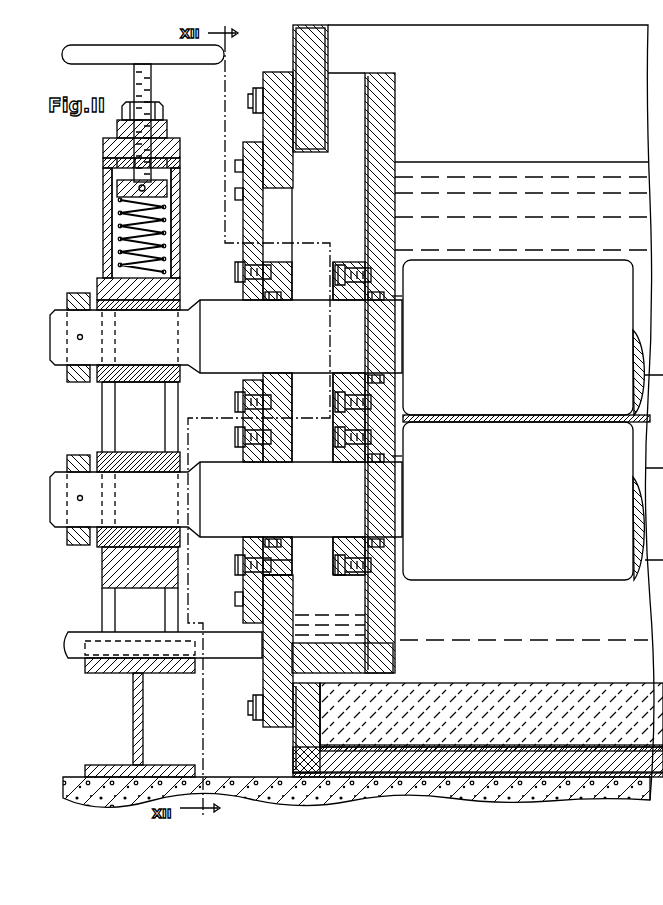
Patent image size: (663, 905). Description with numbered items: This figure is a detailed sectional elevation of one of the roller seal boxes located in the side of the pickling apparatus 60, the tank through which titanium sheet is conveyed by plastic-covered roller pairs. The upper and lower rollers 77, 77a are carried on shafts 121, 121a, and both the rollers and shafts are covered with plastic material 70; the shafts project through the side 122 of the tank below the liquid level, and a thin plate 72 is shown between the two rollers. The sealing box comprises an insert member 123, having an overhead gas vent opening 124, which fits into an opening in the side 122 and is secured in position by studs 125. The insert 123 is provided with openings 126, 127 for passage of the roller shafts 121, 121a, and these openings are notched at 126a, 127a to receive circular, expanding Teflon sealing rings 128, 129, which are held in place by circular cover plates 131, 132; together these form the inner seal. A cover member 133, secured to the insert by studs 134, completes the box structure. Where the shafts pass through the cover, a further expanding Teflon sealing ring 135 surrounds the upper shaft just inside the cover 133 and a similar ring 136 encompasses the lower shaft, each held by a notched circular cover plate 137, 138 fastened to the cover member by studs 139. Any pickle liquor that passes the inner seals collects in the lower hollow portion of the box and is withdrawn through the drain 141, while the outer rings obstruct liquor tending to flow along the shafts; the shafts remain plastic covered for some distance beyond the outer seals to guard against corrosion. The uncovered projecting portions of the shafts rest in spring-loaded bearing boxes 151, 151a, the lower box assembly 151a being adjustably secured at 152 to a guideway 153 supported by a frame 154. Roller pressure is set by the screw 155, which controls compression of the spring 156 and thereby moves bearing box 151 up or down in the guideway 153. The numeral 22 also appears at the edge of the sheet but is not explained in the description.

The apparatus 22 is at (22, 240).
The tank 60 is at (549, 144).
The plastic material 70 is at (515, 262).
The partition plate 72 is at (600, 414).
The roller 77 is at (550, 320).
The roller 77a is at (558, 493).
The shaft 121 is at (149, 355).
The shaft 121a is at (157, 517).
The side 122 is at (328, 42).
The insert member 123 is at (274, 72).
The gas vent opening 124 is at (360, 80).
The studs 125 is at (250, 95).
The opening 126 is at (395, 298).
The notch 126a is at (382, 300).
The opening 127 is at (395, 458).
The notch 127a is at (380, 462).
The sealing ring 128 is at (378, 375).
The sealing ring 129 is at (378, 539).
The cover plate 131 is at (352, 262).
The cover plate 132 is at (358, 565).
The cover member 133 is at (253, 146).
The studs 134 is at (235, 194).
The sealing ring 135 is at (272, 300).
The sealing ring 136 is at (275, 539).
The cover plate 137 is at (285, 275).
The cover plate 138 is at (290, 562).
The studs 139 is at (235, 270).
The drain 141 is at (247, 650).
The bearing box 151 is at (97, 380).
The bearing box 151a is at (97, 545).
The adjustable securing means 152 is at (110, 585).
The guideway 153 is at (149, 424).
The frame 154 is at (133, 712).
The screw 155 is at (134, 84).
The spring 156 is at (108, 215).